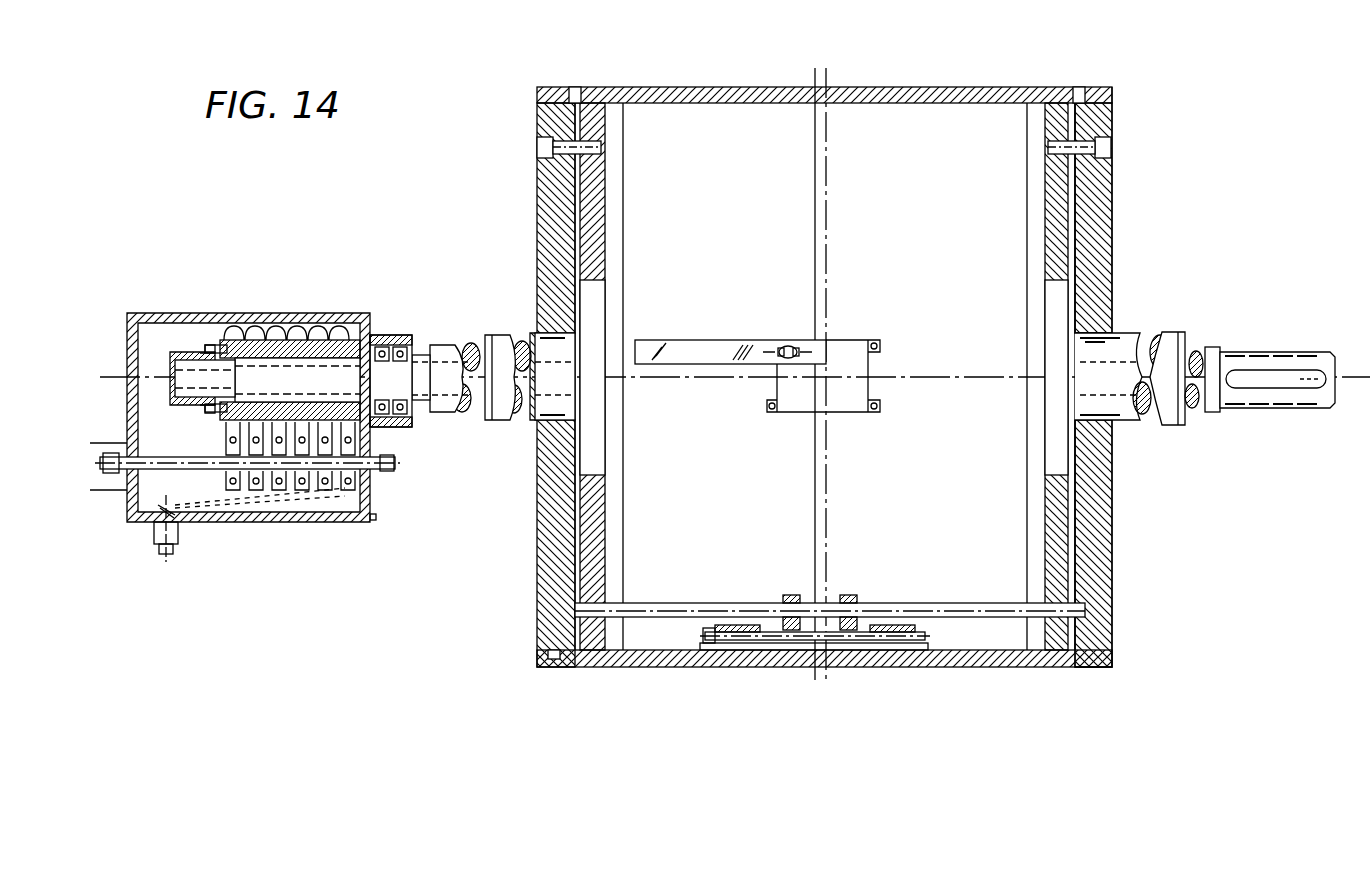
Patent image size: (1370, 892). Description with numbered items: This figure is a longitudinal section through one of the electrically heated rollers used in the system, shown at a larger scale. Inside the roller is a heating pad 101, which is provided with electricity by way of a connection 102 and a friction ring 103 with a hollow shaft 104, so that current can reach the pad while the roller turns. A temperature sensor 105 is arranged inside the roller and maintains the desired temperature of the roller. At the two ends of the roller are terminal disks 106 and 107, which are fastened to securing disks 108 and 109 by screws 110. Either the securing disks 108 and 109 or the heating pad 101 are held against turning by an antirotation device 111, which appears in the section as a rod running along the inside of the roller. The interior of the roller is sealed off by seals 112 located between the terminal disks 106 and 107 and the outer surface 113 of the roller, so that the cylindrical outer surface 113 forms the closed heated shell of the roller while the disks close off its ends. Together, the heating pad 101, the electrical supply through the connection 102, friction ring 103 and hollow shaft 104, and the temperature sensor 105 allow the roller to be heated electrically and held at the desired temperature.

The heating pad 101 is at (820, 345).
The connection 102 is at (158, 530).
The friction ring 103 is at (225, 425).
The hollow shaft 104 is at (385, 340).
The temperature sensor 105 is at (700, 345).
The terminal disk 106 is at (1095, 215).
The terminal disk 107 is at (540, 508).
The securing disk 108 is at (1050, 262).
The securing disk 109 is at (588, 548).
The screws 110 is at (540, 151).
The antirotation device 111 is at (978, 605).
The seals 112 is at (574, 97).
The outer surface 113 is at (742, 90).